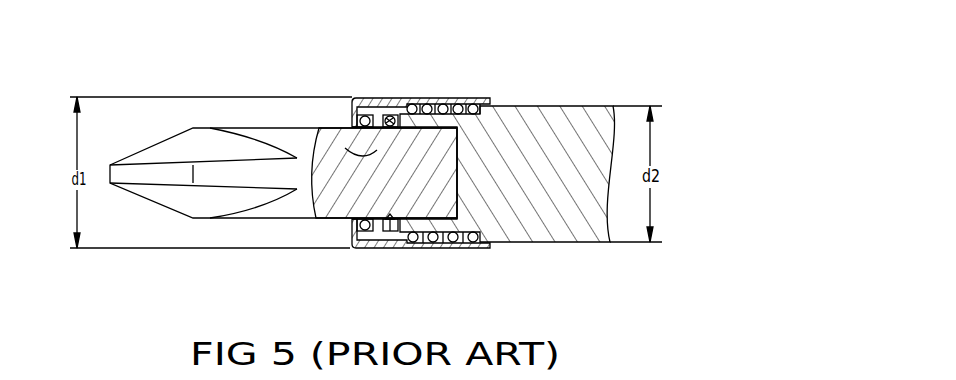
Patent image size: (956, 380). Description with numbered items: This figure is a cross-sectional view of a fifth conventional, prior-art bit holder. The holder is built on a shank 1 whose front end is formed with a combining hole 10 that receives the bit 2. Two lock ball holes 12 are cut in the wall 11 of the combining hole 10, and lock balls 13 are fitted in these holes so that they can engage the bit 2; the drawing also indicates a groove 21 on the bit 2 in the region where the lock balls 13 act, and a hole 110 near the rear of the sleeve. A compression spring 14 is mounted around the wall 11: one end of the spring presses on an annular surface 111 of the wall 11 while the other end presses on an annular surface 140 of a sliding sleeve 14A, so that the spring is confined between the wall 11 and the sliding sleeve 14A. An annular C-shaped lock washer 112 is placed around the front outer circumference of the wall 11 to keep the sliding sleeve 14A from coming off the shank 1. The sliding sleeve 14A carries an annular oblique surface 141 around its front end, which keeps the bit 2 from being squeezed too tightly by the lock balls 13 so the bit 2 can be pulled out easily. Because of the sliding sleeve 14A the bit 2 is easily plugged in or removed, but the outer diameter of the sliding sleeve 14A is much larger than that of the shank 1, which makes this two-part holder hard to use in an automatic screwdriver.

The shank 1 is at (561, 107).
The bit 2 is at (286, 212).
The combining hole 10 is at (436, 106).
The wall 11 is at (419, 103).
The lock ball holes 12 is at (390, 231).
The lock balls 13 is at (385, 115).
The compression spring 14 is at (455, 243).
The sliding sleeve 14A is at (460, 103).
The annular groove 21 is at (345, 150).
The hole 110 is at (487, 248).
The annular surface 111 is at (484, 98).
The C-shaped lock washer 112 is at (364, 231).
The annular surface 140 is at (400, 97).
The annular oblique surface 141 is at (353, 123).